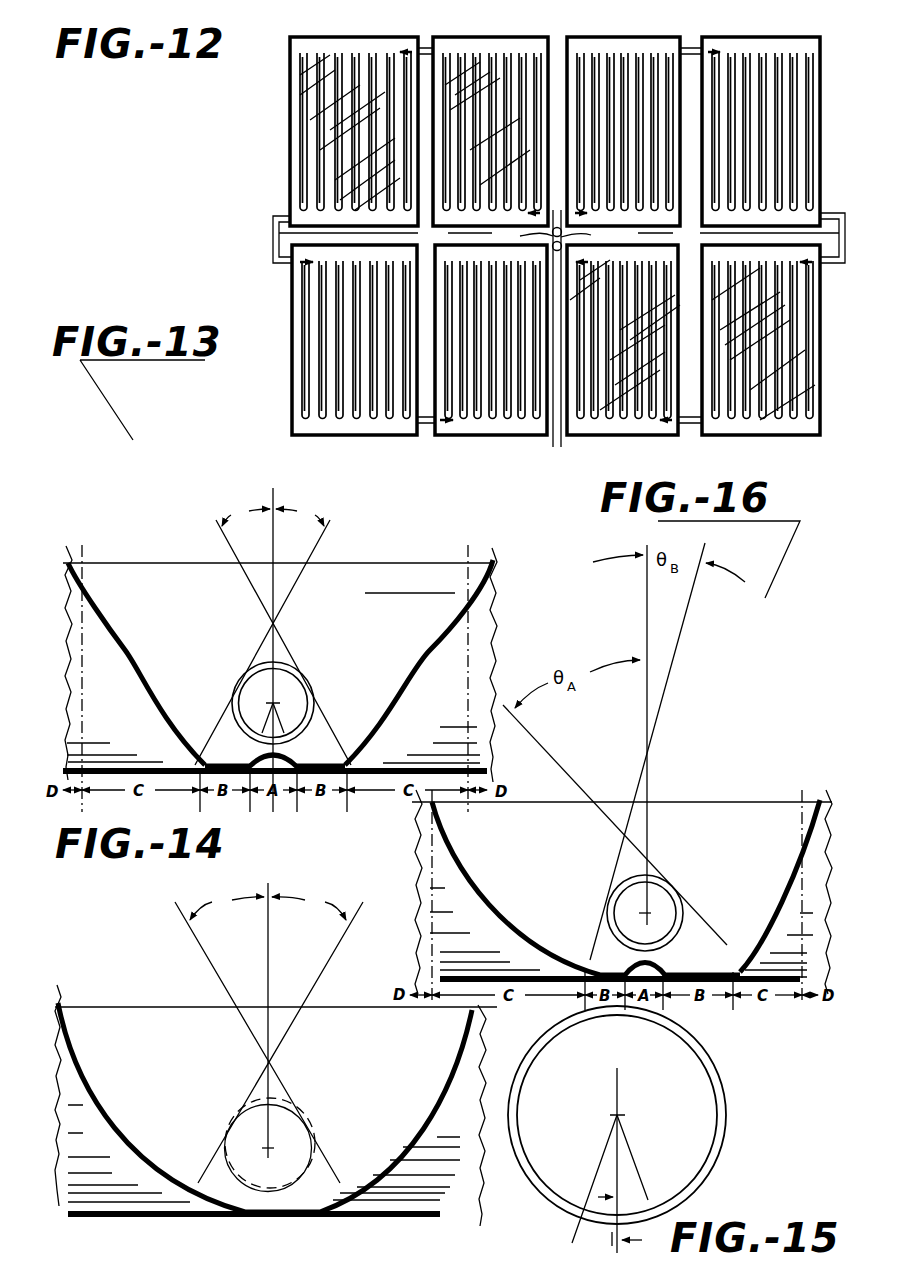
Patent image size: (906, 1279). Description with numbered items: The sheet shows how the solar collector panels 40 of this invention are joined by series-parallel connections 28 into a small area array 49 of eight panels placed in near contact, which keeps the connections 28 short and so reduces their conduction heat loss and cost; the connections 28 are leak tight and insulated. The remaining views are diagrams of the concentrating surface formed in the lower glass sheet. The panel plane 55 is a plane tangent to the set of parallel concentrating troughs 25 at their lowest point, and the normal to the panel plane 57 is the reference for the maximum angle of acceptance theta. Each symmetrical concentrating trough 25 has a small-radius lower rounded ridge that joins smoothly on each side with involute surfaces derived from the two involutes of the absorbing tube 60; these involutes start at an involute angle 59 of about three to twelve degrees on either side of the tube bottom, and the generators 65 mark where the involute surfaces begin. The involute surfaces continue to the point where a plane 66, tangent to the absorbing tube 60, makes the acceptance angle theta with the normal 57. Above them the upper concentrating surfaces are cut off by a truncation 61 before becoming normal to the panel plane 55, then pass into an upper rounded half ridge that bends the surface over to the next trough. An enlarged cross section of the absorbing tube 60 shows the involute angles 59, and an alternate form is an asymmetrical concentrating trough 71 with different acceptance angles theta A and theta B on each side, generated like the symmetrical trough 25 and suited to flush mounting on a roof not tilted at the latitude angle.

In FIG. 12, the small area array 49 is at (258, 157).
In FIG. 12, the solar collector panel 40 is at (290, 100).
In FIG. 12, the series-parallel connections 28 is at (258, 232).
In FIG. 13, the normal to the panel plane 57 is at (272, 494).
In FIG. 14, the normal to the panel plane 57 is at (268, 962).
In FIG. 16, the normal to the panel plane 57 is at (643, 613).
In FIG. 15, the normal to the panel plane 57 is at (624, 1088).
In FIG. 13, the plane 66 is at (225, 538).
In FIG. 14, the plane 66 is at (218, 965).
In FIG. 13, the truncation 61 is at (388, 593).
In FIG. 13, the parallel concentrating trough 25 is at (142, 690).
In FIG. 14, the parallel concentrating trough 25 is at (265, 1107).
In FIG. 16, the parallel concentrating trough 25 is at (765, 906).
In FIG. 13, the generators 65 is at (247, 756).
In FIG. 13, the absorbing tube 60 is at (285, 663).
In FIG. 14, the absorbing tube 60 is at (310, 1126).
In FIG. 16, the absorbing tube 60 is at (623, 880).
In FIG. 15, the absorbing tube 60 is at (726, 1108).
In FIG. 13, the involute angle 59 is at (279, 727).
In FIG. 15, the involute angle 59 is at (652, 1190).
In FIG. 13, the panel plane 55 is at (163, 763).
In FIG. 14, the panel plane 55 is at (444, 1212).
In FIG. 16, the panel plane 55 is at (828, 980).
In FIG. 16, the asymmetrical concentrating trough 71 is at (500, 914).